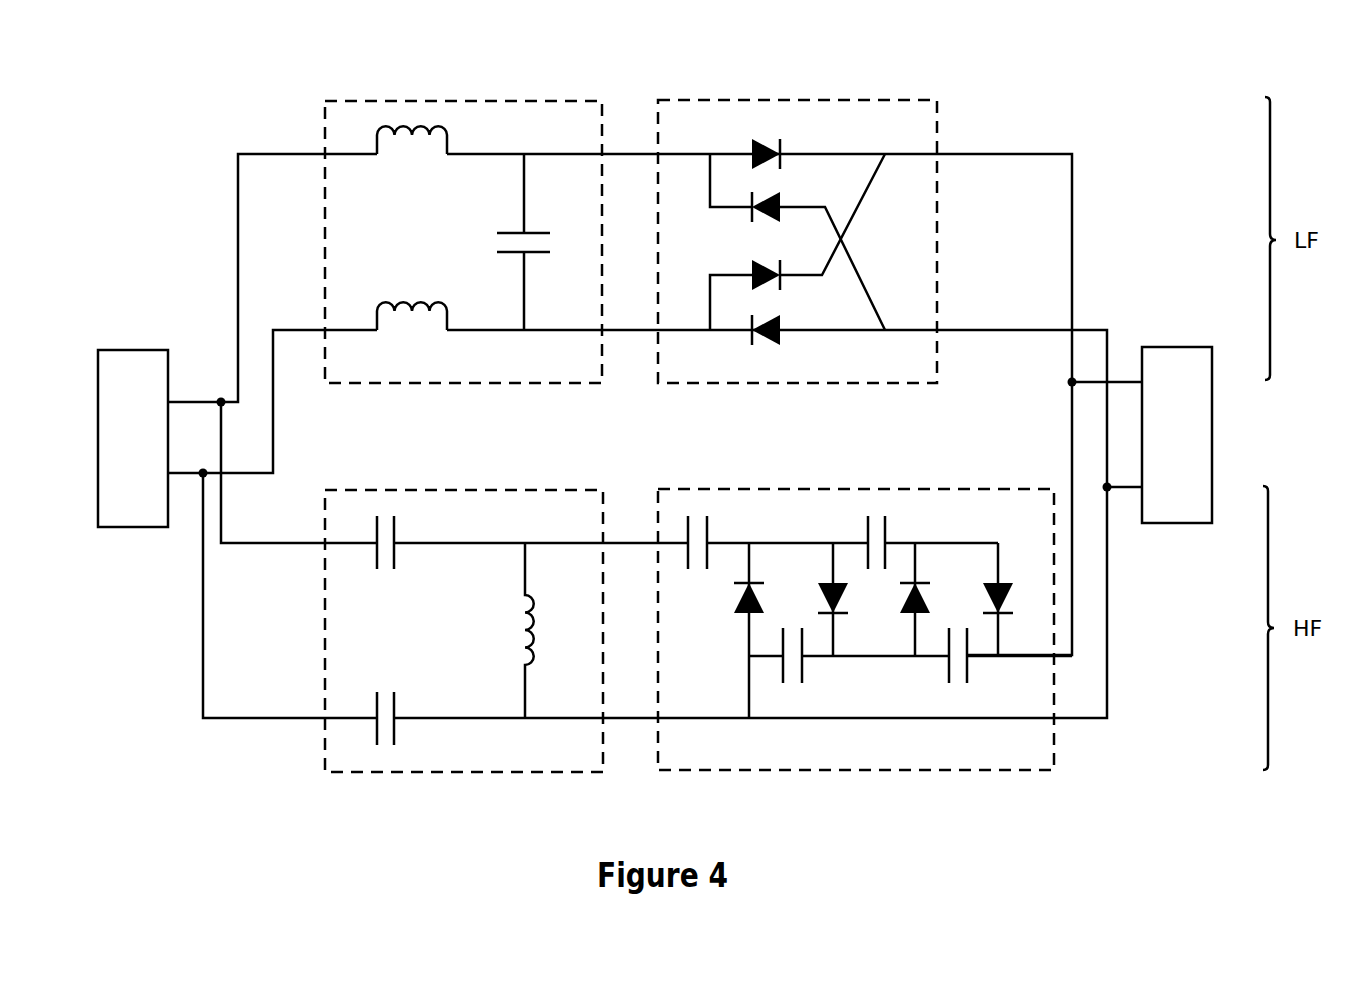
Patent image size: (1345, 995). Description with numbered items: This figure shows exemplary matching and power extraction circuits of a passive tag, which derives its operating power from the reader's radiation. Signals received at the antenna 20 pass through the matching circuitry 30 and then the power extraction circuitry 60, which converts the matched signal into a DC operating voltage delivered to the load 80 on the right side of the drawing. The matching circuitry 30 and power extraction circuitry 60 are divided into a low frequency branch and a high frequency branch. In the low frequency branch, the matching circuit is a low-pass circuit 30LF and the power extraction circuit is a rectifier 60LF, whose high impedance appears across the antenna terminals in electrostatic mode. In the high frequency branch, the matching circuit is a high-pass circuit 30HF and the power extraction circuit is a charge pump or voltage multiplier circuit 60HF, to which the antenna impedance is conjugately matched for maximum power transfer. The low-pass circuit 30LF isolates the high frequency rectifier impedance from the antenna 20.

The antenna 20 is at (141, 350).
The matching circuitry 30 is at (600, 58).
The power extraction circuitry 60 is at (1054, 56).
The load 80 is at (1182, 347).
The low-pass circuit 30LF is at (481, 384).
The rectifier 60LF is at (774, 384).
The high-pass circuit 30HF is at (577, 490).
The charge pump or voltage multiplier circuit 60HF is at (868, 489).